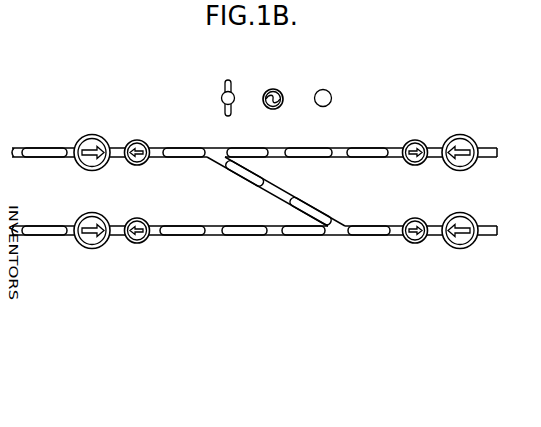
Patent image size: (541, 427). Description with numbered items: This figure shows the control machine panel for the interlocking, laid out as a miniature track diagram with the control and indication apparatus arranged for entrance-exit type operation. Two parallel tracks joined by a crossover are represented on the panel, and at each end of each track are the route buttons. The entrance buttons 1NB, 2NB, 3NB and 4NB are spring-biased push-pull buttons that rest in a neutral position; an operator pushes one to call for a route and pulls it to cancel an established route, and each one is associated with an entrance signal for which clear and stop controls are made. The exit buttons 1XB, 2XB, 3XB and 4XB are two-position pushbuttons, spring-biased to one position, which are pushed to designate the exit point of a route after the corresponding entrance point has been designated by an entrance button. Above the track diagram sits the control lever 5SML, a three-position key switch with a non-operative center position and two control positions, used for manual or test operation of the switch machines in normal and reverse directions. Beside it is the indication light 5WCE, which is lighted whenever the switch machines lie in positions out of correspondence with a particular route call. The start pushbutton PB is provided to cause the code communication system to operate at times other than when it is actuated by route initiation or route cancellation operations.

The entrance button 1NB is at (92, 135).
The exit button 1XB is at (133, 140).
The entrance button 2NB is at (93, 212).
The exit button 2XB is at (132, 218).
The exit button 3XB is at (415, 140).
The entrance button 3NB is at (458, 135).
The exit button 4XB is at (415, 218).
The entrance button 4NB is at (458, 212).
The control lever 5SML is at (227, 80).
The indication light 5WCE is at (271, 89).
The start pushbutton PB is at (325, 90).